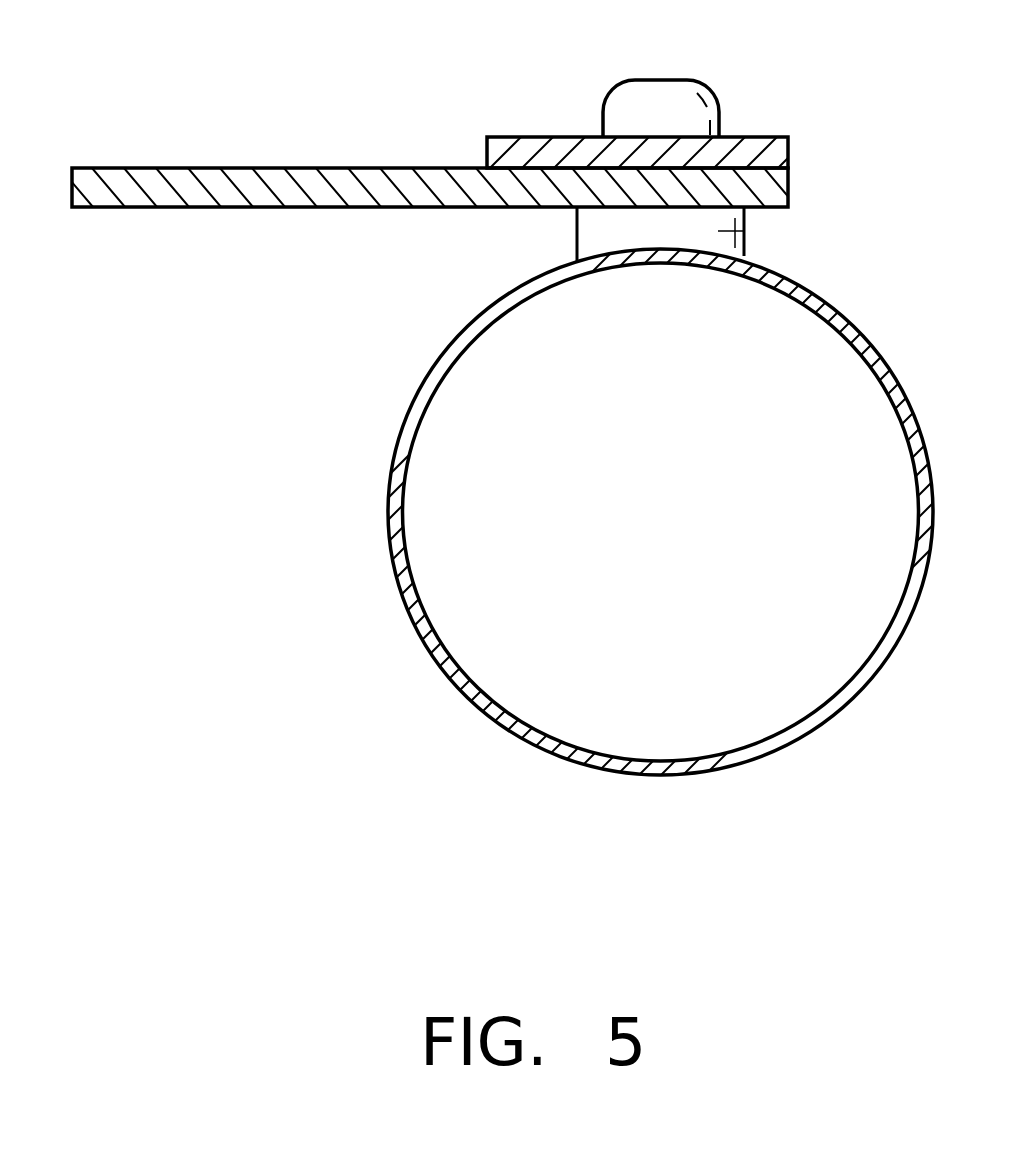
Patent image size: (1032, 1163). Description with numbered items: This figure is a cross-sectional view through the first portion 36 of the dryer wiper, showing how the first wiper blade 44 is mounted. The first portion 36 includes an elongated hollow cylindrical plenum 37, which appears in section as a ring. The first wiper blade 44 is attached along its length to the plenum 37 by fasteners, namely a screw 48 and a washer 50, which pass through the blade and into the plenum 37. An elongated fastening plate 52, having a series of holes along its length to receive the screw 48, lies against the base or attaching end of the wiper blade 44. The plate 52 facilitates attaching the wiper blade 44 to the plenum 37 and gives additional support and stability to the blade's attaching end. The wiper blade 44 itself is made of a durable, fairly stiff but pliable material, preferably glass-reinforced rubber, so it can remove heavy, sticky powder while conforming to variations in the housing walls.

The first portion 36 is at (779, 756).
The plenum 37 is at (453, 618).
The first wiper blade 44 is at (203, 208).
The screw 48 is at (662, 78).
The washer 50 is at (744, 231).
The fastening plate 52 is at (527, 137).